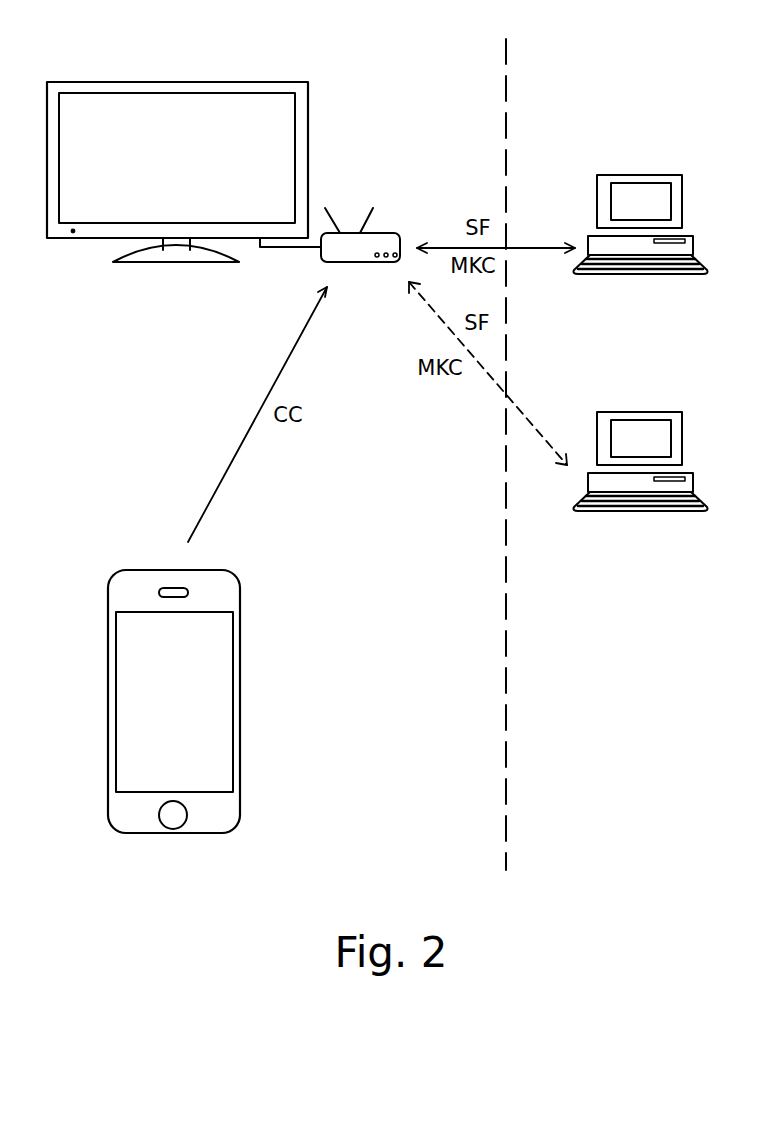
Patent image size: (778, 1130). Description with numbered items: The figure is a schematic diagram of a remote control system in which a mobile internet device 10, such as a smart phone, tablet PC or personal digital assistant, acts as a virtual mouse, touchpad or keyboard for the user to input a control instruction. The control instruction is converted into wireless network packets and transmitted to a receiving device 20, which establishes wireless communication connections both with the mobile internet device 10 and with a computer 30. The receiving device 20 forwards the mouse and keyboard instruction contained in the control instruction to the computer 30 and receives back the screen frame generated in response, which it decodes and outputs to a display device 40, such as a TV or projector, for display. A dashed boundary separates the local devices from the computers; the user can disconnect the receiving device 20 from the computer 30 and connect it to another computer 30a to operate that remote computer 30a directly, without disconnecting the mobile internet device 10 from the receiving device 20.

The mobile internet device 10 is at (148, 570).
The receiving device 20 is at (345, 257).
The computer 30 is at (645, 175).
The another computer 30a is at (645, 412).
The display device 40 is at (231, 80).